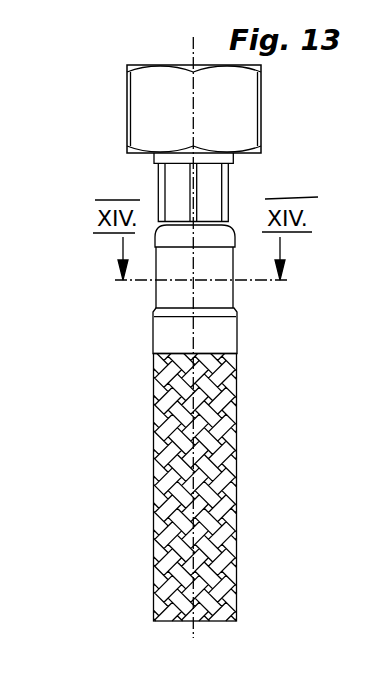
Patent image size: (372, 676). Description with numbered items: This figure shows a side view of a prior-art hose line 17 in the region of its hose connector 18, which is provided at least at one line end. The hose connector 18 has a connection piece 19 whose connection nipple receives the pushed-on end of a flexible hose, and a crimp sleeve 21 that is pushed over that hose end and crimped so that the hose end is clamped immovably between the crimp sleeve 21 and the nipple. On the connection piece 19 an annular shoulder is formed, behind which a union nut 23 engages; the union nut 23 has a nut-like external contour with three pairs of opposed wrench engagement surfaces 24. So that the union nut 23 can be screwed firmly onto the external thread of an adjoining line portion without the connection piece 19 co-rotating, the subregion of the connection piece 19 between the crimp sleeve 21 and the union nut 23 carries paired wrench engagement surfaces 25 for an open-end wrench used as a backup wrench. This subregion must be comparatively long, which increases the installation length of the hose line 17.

The hose line 17 is at (78, 335).
The hose connector 18 is at (283, 157).
The connection piece 19 is at (152, 178).
The crimp sleeve 21 is at (218, 293).
The union nut 23 is at (275, 105).
The wrench engagement surfaces 24 is at (138, 118).
The wrench engagement surfaces 25 is at (217, 190).